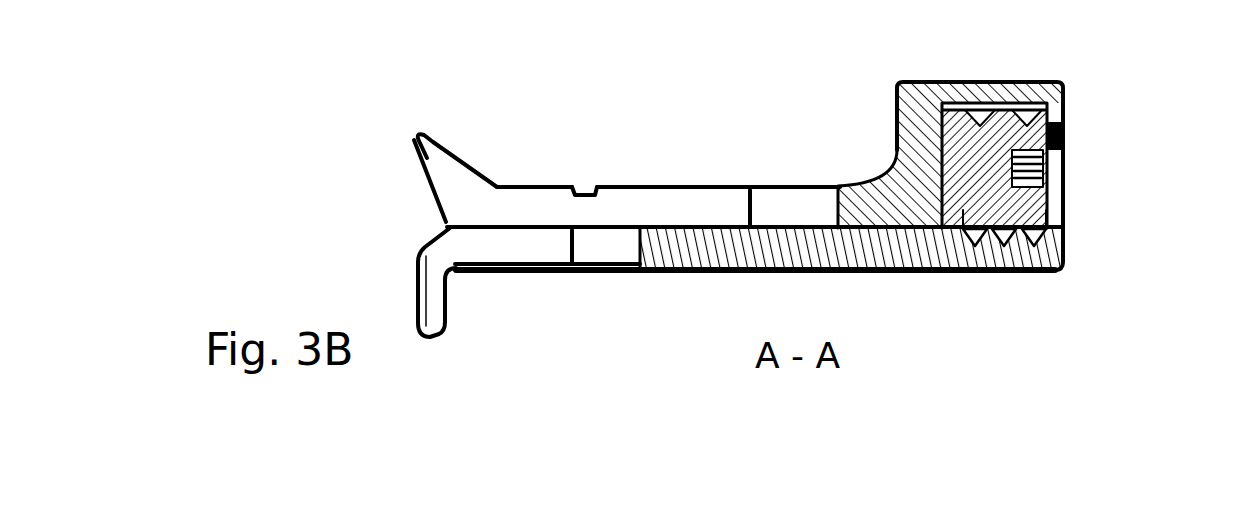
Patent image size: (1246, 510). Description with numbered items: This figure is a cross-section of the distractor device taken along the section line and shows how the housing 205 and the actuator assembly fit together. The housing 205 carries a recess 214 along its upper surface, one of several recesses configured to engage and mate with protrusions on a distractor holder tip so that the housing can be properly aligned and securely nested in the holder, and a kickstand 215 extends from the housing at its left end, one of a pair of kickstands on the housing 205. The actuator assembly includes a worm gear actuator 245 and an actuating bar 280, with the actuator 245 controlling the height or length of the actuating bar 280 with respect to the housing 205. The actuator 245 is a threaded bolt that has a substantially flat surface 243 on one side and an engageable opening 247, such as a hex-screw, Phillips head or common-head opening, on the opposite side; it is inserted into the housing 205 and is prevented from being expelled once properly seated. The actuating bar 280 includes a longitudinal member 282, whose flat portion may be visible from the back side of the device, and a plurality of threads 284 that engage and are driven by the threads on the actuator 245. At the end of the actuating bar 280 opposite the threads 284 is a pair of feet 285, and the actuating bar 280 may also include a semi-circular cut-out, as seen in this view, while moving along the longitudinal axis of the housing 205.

The housing 205 is at (645, 185).
The recess 214 is at (582, 185).
The kickstand 215 is at (430, 143).
The substantially flat surface 243 is at (931, 82).
The worm gear actuator 245 is at (1060, 237).
The engageable opening 247 is at (1062, 153).
The actuating bar 280 is at (972, 273).
The longitudinal member 282 is at (637, 270).
The threads 284 is at (853, 186).
The feet 285 is at (430, 332).